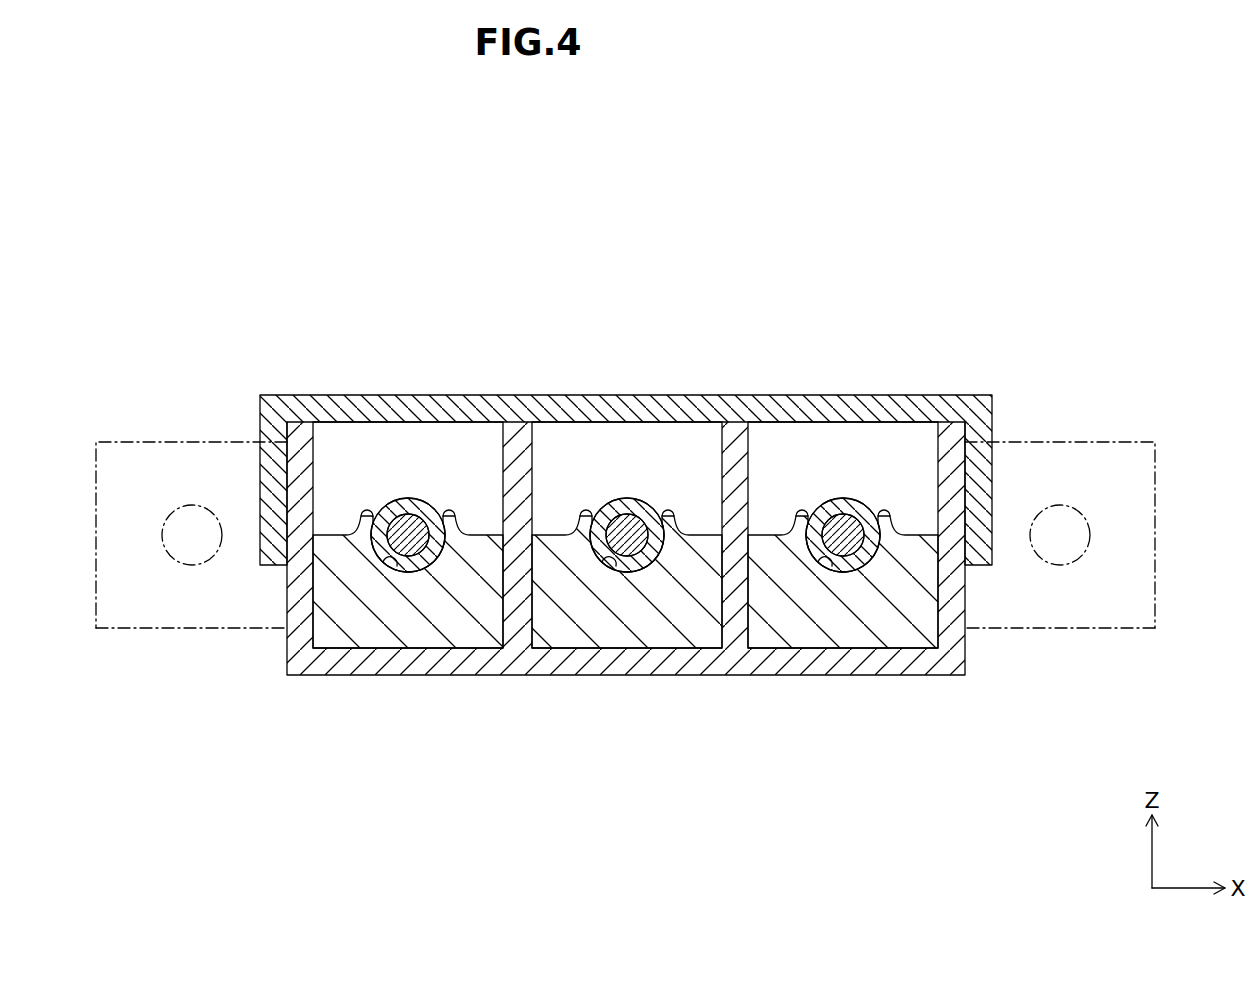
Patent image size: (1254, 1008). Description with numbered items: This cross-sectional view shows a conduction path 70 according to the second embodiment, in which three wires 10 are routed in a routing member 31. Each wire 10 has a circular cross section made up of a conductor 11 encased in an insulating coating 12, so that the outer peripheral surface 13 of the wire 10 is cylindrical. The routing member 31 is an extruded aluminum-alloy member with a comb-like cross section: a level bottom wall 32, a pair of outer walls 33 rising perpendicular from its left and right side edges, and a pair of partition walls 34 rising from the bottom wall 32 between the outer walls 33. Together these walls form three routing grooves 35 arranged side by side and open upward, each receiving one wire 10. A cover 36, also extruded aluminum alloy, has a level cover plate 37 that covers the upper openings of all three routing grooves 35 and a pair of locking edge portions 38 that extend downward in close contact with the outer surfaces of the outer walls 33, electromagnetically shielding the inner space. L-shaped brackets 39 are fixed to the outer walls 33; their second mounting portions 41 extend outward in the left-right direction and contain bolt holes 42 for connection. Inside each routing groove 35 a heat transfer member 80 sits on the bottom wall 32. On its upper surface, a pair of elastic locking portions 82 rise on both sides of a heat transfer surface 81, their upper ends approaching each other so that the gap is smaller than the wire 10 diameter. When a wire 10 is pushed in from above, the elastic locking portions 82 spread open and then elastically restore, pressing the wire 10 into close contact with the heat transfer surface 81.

The wire 10 is at (625, 640).
The conductor 11 is at (415, 542).
The insulating coating 12 is at (437, 566).
The outer peripheral surface 13 is at (413, 500).
The routing member 31 is at (623, 557).
The bottom wall 32 is at (660, 662).
The outer wall 33 is at (292, 592).
The partition wall 34 is at (517, 495).
The routing groove 35 is at (402, 457).
The cover 36 is at (625, 426).
The cover plate 37 is at (556, 405).
The locking edge portion 38 is at (272, 487).
The bracket 39 is at (148, 628).
The second mounting portion 41 is at (625, 535).
The bolt hole 42 is at (185, 514).
The conduction path 70 is at (918, 307).
The heat transfer member 80 is at (344, 622).
The heat transfer surface 81 is at (404, 566).
The elastic locking portion 82 is at (366, 508).